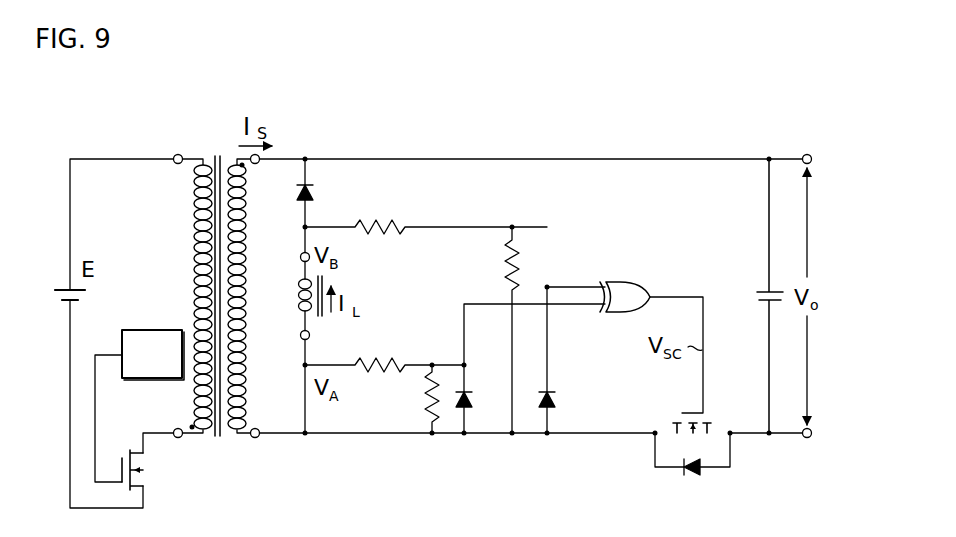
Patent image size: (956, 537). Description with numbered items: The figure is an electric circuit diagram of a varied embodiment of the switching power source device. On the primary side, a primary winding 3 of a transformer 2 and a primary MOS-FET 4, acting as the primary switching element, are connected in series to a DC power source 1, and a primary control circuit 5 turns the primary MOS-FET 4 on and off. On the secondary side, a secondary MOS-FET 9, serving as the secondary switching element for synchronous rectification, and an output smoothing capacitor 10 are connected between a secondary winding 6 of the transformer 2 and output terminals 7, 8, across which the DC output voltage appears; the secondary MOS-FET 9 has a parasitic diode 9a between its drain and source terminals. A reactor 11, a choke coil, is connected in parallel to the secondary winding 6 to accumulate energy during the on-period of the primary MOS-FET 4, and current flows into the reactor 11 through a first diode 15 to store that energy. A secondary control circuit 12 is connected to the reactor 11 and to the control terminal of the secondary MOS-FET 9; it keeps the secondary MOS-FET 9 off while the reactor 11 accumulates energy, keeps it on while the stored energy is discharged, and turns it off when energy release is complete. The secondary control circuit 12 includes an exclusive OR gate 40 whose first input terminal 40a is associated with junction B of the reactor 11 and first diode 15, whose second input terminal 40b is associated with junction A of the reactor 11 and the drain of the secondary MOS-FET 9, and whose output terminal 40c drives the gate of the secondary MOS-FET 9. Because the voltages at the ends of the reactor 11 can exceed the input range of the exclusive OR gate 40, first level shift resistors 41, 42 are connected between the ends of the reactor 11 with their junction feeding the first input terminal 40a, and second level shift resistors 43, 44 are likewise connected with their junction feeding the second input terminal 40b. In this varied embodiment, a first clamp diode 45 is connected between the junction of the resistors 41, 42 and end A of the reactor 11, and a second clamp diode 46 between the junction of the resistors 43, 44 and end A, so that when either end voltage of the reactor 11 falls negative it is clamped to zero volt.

The DC power source 1 is at (60, 283).
The transformer 2 is at (219, 154).
The primary winding 3 is at (198, 207).
The primary MOS-FET 4 is at (145, 470).
The primary control circuit 5 is at (160, 286).
The secondary winding 6 is at (242, 309).
The output terminal 7 is at (807, 153).
The output terminal 8 is at (807, 438).
The secondary MOS-FET 9 is at (680, 412).
The parasitic diode 9a is at (692, 470).
The output smoothing capacitor 10 is at (760, 298).
The reactor 11 is at (299, 290).
The secondary control circuit 12 is at (583, 296).
The first diode 15 is at (316, 190).
The exclusive OR gate 40 is at (624, 280).
The first input terminal 40a is at (575, 286).
The second input terminal 40b is at (575, 306).
The output terminal 40c is at (676, 296).
The first level shift resistor 41 is at (388, 233).
The first level shift resistor 42 is at (507, 264).
The second level shift resistor 43 is at (390, 359).
The second level shift resistor 44 is at (425, 392).
The first clamp diode 45 is at (557, 398).
The second clamp diode 46 is at (472, 396).